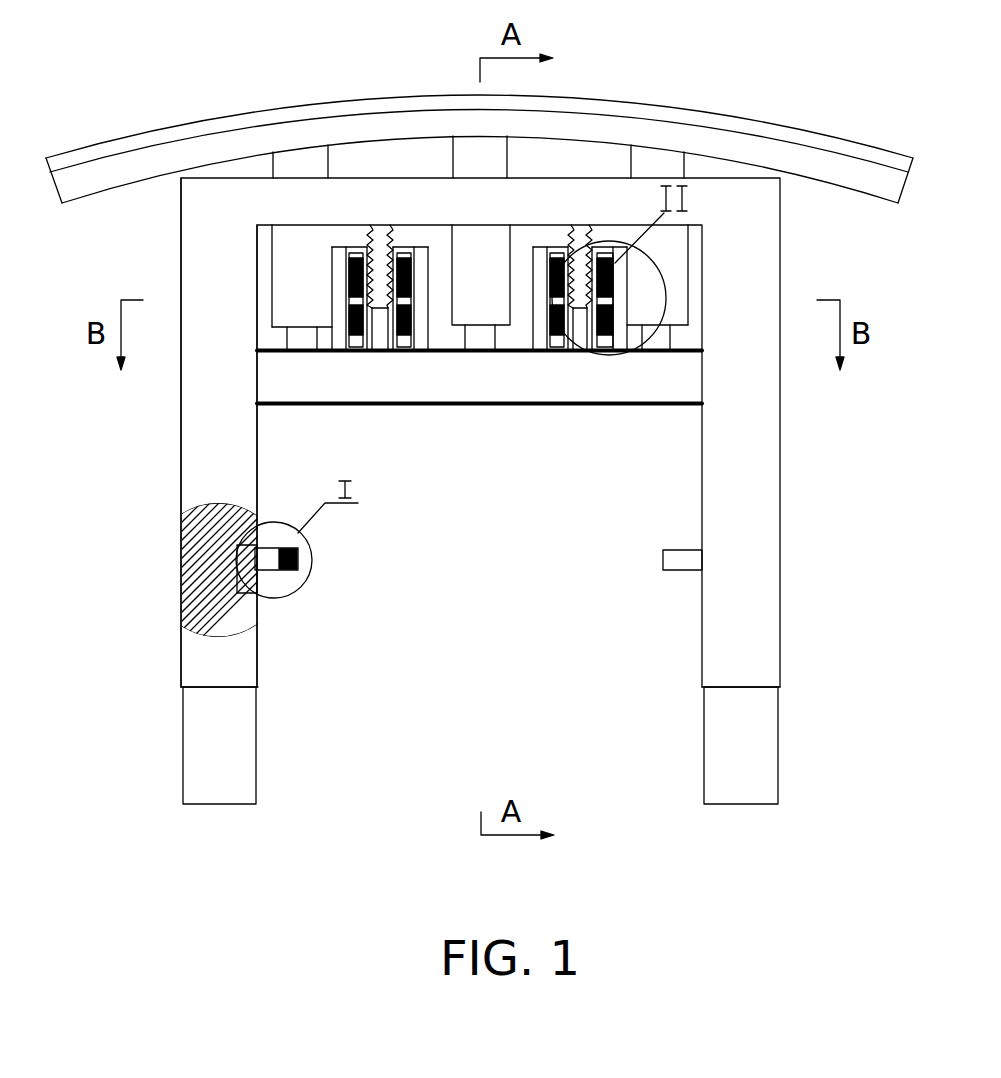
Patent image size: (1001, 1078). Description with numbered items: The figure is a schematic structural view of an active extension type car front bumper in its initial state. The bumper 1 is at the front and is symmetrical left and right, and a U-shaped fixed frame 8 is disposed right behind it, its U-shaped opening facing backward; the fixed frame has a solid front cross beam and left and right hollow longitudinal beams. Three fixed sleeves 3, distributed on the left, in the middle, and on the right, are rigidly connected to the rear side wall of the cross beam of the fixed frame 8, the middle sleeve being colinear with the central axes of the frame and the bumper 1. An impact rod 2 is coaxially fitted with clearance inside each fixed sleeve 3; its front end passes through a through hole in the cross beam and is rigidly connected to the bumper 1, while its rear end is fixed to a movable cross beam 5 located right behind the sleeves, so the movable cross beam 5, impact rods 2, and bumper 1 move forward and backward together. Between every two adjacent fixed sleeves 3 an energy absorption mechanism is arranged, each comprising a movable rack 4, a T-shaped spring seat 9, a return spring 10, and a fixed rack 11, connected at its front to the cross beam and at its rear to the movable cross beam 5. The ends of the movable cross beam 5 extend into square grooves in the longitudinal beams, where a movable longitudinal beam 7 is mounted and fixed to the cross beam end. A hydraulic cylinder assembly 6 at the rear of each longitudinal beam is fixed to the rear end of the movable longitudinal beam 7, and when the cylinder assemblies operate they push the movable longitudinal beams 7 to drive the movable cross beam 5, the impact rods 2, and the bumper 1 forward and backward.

The bumper 1 is at (533, 124).
The impact rod 2 is at (667, 170).
The fixed sleeve 3 is at (667, 307).
The movable rack 4 is at (622, 300).
The movable cross beam 5 is at (622, 388).
The hydraulic cylinder assembly 6 is at (745, 745).
The movable longitudinal beam 7 is at (200, 597).
The U-shaped fixed frame 8 is at (215, 457).
The T-shaped spring seat 9 is at (345, 330).
The return spring 10 is at (348, 324).
The fixed rack 11 is at (383, 280).